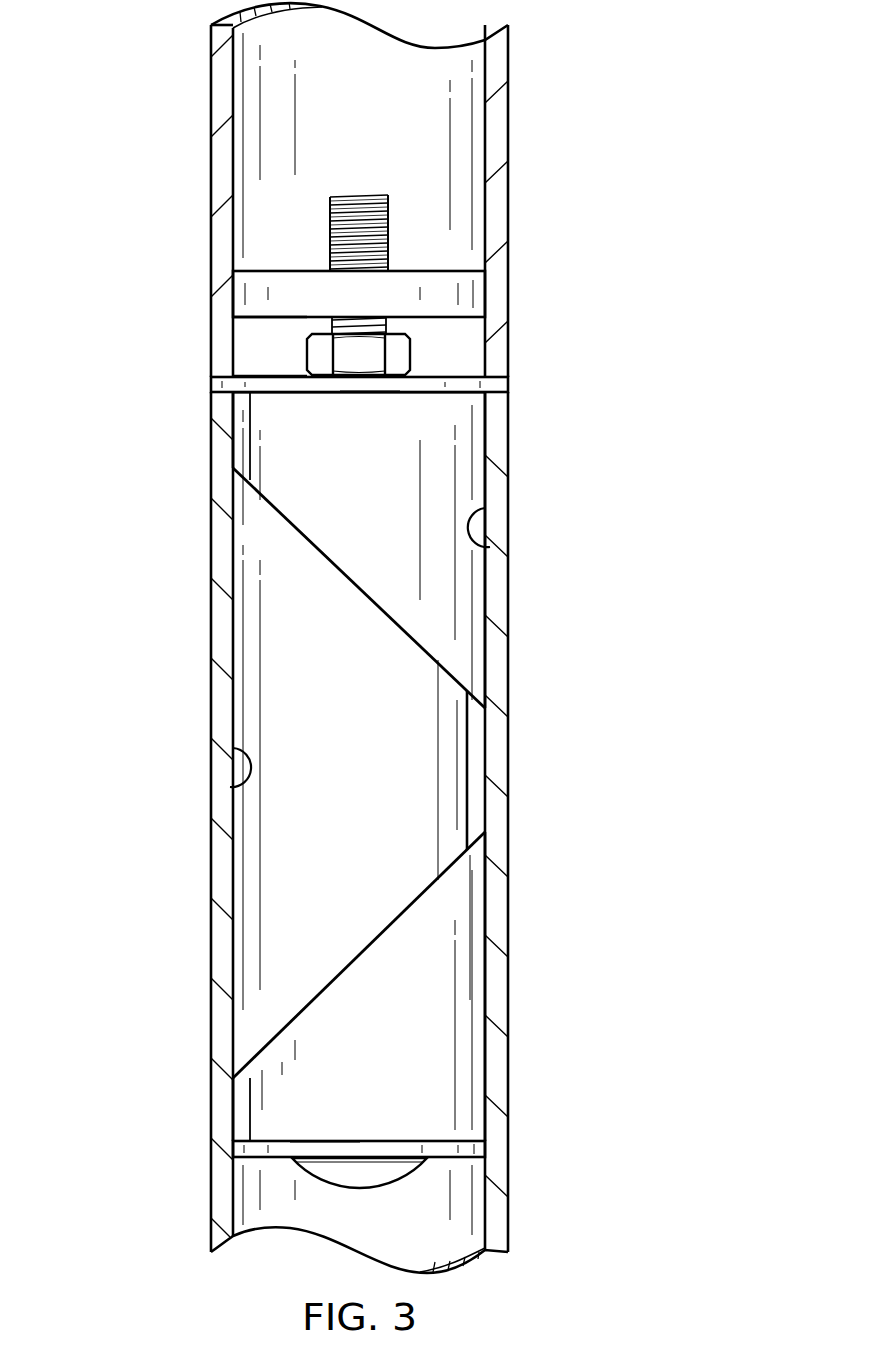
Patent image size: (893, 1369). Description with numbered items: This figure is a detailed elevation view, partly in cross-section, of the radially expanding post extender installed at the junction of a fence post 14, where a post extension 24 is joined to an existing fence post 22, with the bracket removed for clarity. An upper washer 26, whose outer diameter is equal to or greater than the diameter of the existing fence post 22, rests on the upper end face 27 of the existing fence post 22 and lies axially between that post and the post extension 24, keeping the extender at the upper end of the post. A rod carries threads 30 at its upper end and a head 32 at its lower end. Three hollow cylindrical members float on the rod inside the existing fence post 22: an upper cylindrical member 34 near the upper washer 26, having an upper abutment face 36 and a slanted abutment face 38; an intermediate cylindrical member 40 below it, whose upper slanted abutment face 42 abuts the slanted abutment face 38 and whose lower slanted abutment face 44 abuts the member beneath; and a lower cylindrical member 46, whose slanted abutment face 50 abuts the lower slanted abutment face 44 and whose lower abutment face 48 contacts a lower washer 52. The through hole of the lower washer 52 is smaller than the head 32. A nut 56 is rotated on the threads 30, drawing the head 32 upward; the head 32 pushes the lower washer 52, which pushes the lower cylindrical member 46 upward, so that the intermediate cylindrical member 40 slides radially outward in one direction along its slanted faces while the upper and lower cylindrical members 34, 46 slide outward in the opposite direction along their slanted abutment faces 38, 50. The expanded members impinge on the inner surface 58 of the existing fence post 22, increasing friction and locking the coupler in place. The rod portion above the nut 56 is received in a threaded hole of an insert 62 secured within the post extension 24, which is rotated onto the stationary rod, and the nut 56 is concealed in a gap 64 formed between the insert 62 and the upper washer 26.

The fence post 14 is at (106, 586).
The existing fence post 22 is at (509, 753).
The post extension 24 is at (511, 203).
The upper washer 26 is at (373, 387).
The upper end face 27 is at (510, 385).
The threads 30 is at (330, 205).
The head 32 is at (383, 1175).
The upper cylindrical member 34 is at (381, 505).
The upper abutment face 36 is at (318, 393).
The slanted abutment face 38 is at (320, 558).
The intermediate cylindrical member 40 is at (364, 787).
The upper slanted abutment face 42 is at (356, 589).
The lower slanted abutment face 44 is at (366, 948).
The lower cylindrical member 46 is at (381, 1055).
The lower abutment face 48 is at (397, 1145).
The slanted abutment face 50 is at (318, 992).
The lower washer 52 is at (332, 1146).
The nut 56 is at (412, 355).
The inner surface 58 is at (484, 543).
The insert 62 is at (438, 281).
The gap 64 is at (245, 347).